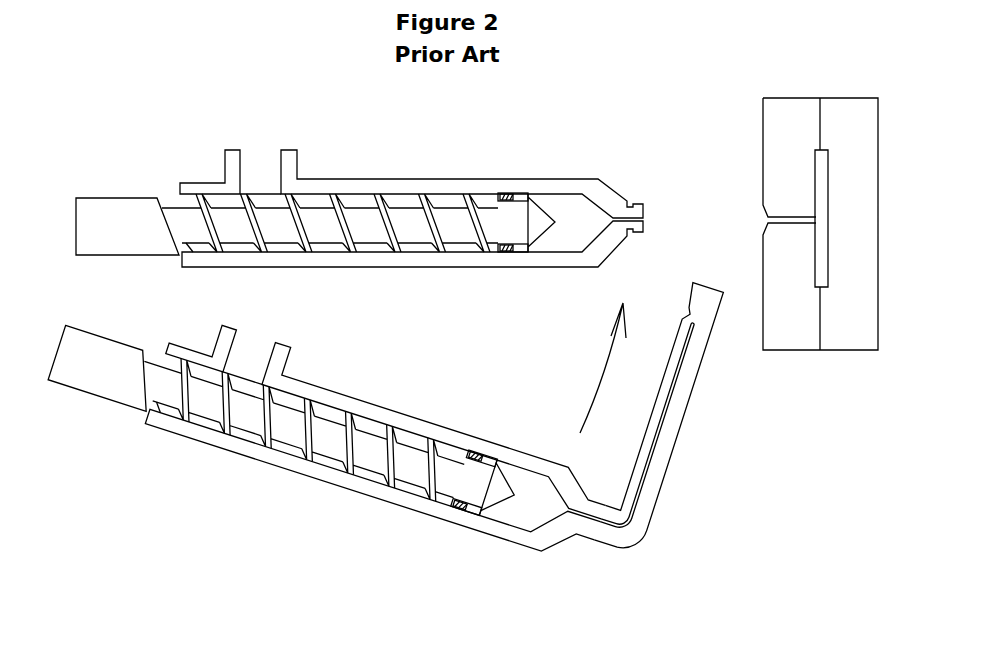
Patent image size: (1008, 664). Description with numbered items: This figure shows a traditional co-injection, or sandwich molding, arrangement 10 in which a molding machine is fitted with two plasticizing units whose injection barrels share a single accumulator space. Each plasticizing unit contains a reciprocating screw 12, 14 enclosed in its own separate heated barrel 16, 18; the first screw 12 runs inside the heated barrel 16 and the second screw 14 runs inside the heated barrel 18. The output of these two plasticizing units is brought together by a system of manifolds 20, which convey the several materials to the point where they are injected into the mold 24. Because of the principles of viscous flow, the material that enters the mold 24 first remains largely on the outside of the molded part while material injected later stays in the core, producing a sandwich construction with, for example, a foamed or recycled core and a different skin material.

The prior art injection molding system 10 is at (818, 524).
The reciprocating screw 12 is at (243, 246).
The reciprocating screw 14 is at (240, 430).
The heated barrel 16 is at (373, 268).
The heated barrel 18 is at (357, 492).
The manifolds 20 is at (690, 297).
The mold 24 is at (783, 352).